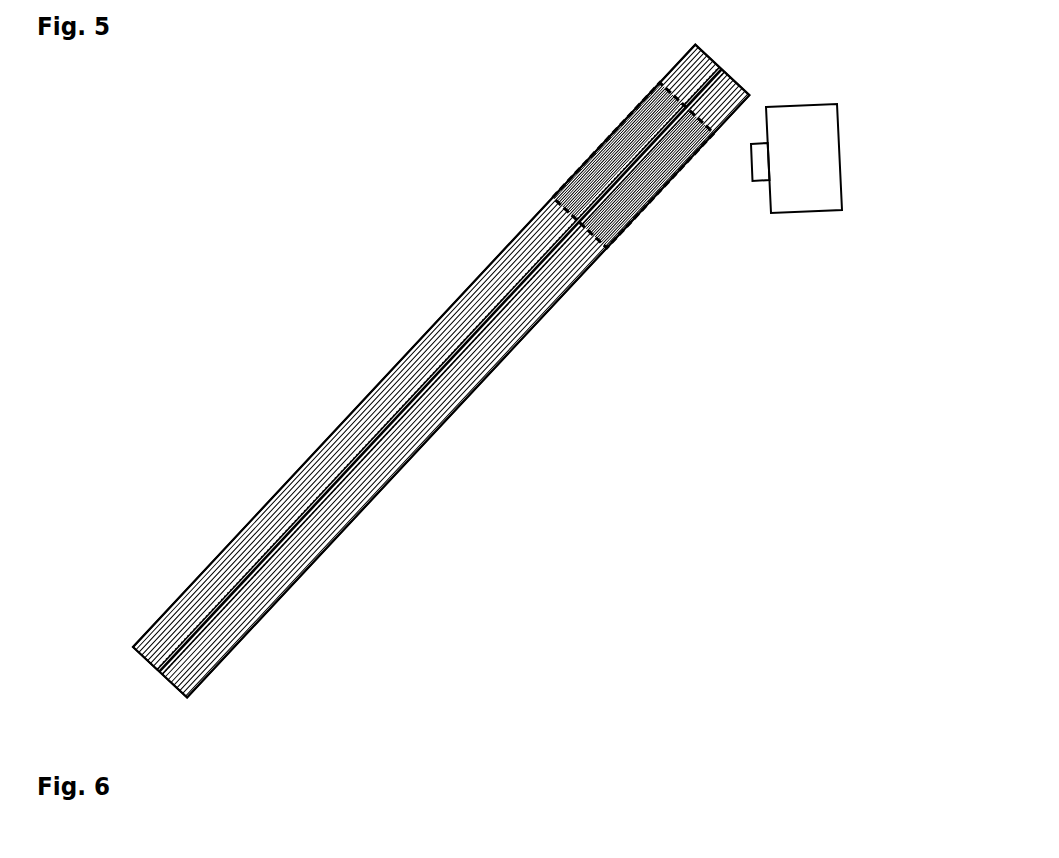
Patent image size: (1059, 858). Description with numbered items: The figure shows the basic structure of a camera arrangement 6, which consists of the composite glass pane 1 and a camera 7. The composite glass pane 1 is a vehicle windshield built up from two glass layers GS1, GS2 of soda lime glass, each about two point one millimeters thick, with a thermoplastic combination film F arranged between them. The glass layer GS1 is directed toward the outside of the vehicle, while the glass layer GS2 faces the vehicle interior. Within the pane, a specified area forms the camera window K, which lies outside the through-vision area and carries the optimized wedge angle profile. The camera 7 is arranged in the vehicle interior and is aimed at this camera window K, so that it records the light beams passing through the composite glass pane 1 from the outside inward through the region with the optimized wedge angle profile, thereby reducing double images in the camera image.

The composite glass pane 1 is at (748, 80).
The camera arrangement 6 is at (398, 201).
The camera 7 is at (780, 180).
The camera window K is at (608, 144).
The glass layer GS1 is at (152, 650).
The glass layer GS2 is at (177, 692).
The thermoplastic combination film F is at (163, 672).